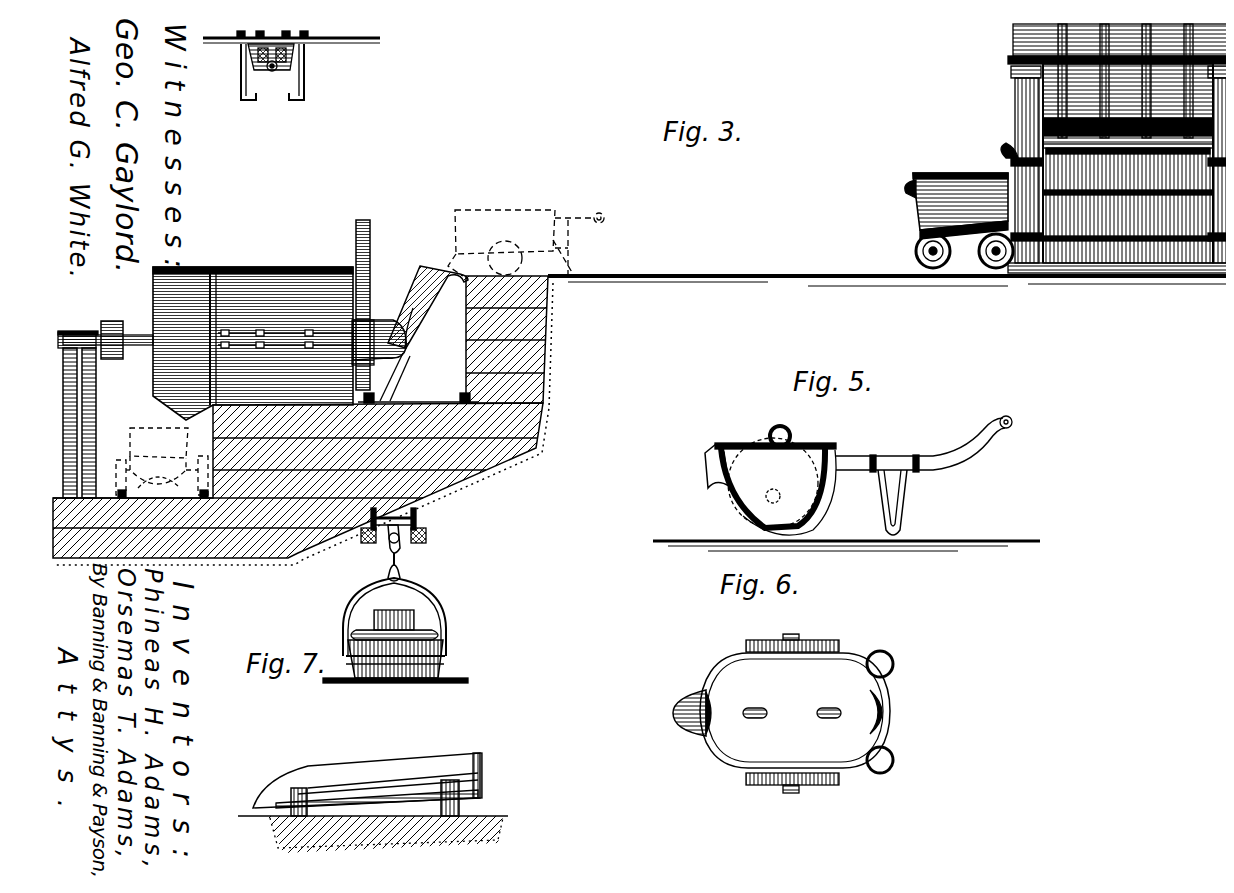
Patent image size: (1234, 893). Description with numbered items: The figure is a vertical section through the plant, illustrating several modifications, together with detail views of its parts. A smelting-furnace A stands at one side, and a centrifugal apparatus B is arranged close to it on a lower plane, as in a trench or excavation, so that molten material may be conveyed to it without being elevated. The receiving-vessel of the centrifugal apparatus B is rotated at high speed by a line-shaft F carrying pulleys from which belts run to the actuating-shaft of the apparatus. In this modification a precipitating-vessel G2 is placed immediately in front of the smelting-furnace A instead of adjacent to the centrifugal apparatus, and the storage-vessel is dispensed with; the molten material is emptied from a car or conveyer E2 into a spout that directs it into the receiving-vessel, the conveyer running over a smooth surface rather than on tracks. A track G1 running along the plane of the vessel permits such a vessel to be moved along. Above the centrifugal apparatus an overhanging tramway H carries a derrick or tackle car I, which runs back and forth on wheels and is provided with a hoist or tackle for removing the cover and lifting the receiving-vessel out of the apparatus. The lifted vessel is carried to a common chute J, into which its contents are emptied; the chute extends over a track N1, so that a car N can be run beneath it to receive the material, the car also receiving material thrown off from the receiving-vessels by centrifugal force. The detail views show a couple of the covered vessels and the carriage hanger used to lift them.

In FIG. 3, the smelting-furnace A is at (1090, 148).
In FIG. 3, the centrifugal apparatus B is at (253, 343).
In FIG. 3, the car or conveyer E2 is at (502, 212).
In FIG. 5, the car or conveyer E2 is at (770, 480).
In FIG. 3, the line-shaft F is at (265, 60).
In FIG. 3, the overhanging tramway H is at (284, 92).
In FIG. 7, the overhanging tramway H is at (420, 532).
In FIG. 3, the track G1 is at (455, 390).
In FIG. 3, the precipitating-vessel G2 is at (950, 166).
In FIG. 6, the precipitating-vessel G2 is at (783, 713).
In FIG. 7, the derrick or tackle car I is at (352, 515).
In FIG. 7, the chute J is at (384, 755).
In FIG. 3, the car N is at (140, 425).
In FIG. 3, the track N1 is at (159, 483).